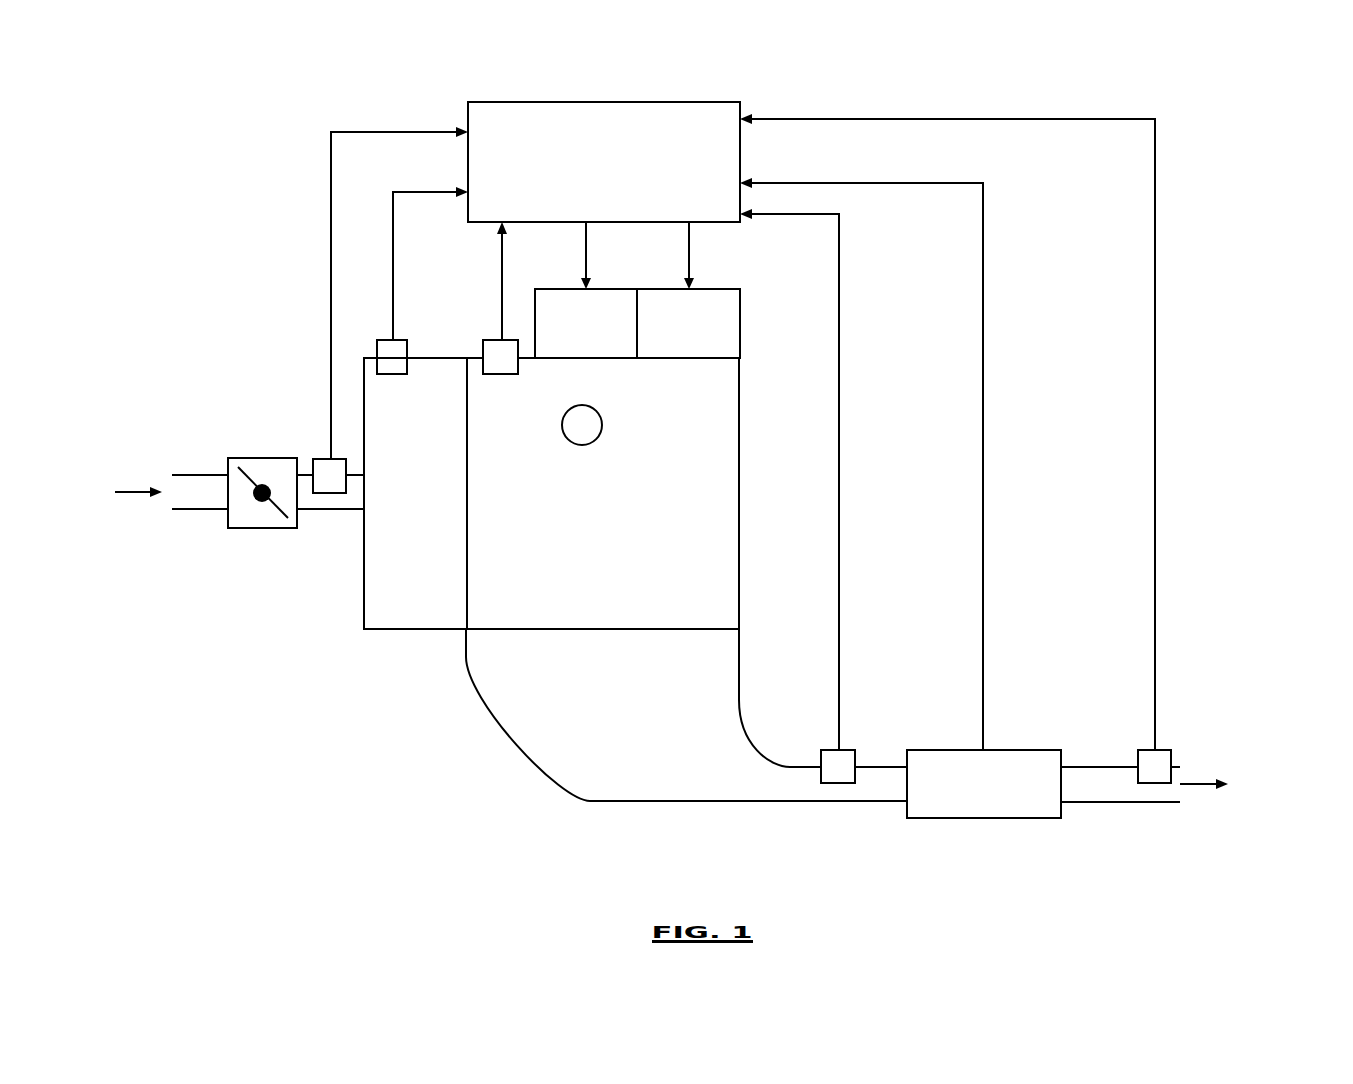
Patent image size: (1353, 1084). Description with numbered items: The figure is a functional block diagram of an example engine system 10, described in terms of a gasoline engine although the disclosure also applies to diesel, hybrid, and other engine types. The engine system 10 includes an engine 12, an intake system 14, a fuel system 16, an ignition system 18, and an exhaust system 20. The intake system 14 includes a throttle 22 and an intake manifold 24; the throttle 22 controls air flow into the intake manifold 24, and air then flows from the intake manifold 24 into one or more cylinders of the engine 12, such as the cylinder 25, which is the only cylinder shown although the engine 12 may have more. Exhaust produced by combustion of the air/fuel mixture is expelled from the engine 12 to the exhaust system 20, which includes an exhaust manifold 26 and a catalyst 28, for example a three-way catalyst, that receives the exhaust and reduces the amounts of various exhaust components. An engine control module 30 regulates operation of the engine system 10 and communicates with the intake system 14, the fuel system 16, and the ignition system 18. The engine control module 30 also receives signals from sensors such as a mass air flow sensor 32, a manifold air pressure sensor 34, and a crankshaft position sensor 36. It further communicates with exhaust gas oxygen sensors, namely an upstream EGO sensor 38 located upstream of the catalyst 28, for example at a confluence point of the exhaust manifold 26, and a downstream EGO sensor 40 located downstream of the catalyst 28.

The engine system 10 is at (192, 99).
The engine 12 is at (740, 492).
The intake system 14 is at (260, 387).
The fuel system 16 is at (545, 289).
The ignition system 18 is at (728, 289).
The exhaust system 20 is at (688, 840).
The throttle 22 is at (262, 458).
The intake manifold 24 is at (364, 580).
The cylinder 25 is at (603, 426).
The exhaust manifold 26 is at (466, 647).
The catalyst 28 is at (1030, 750).
The engine control module 30 is at (600, 102).
The mass air flow sensor 32 is at (320, 459).
The manifold air pressure sensor 34 is at (383, 340).
The crankshaft position sensor 36 is at (492, 340).
The upstream EGO sensor 38 is at (835, 750).
The downstream EGO sensor 40 is at (1172, 758).